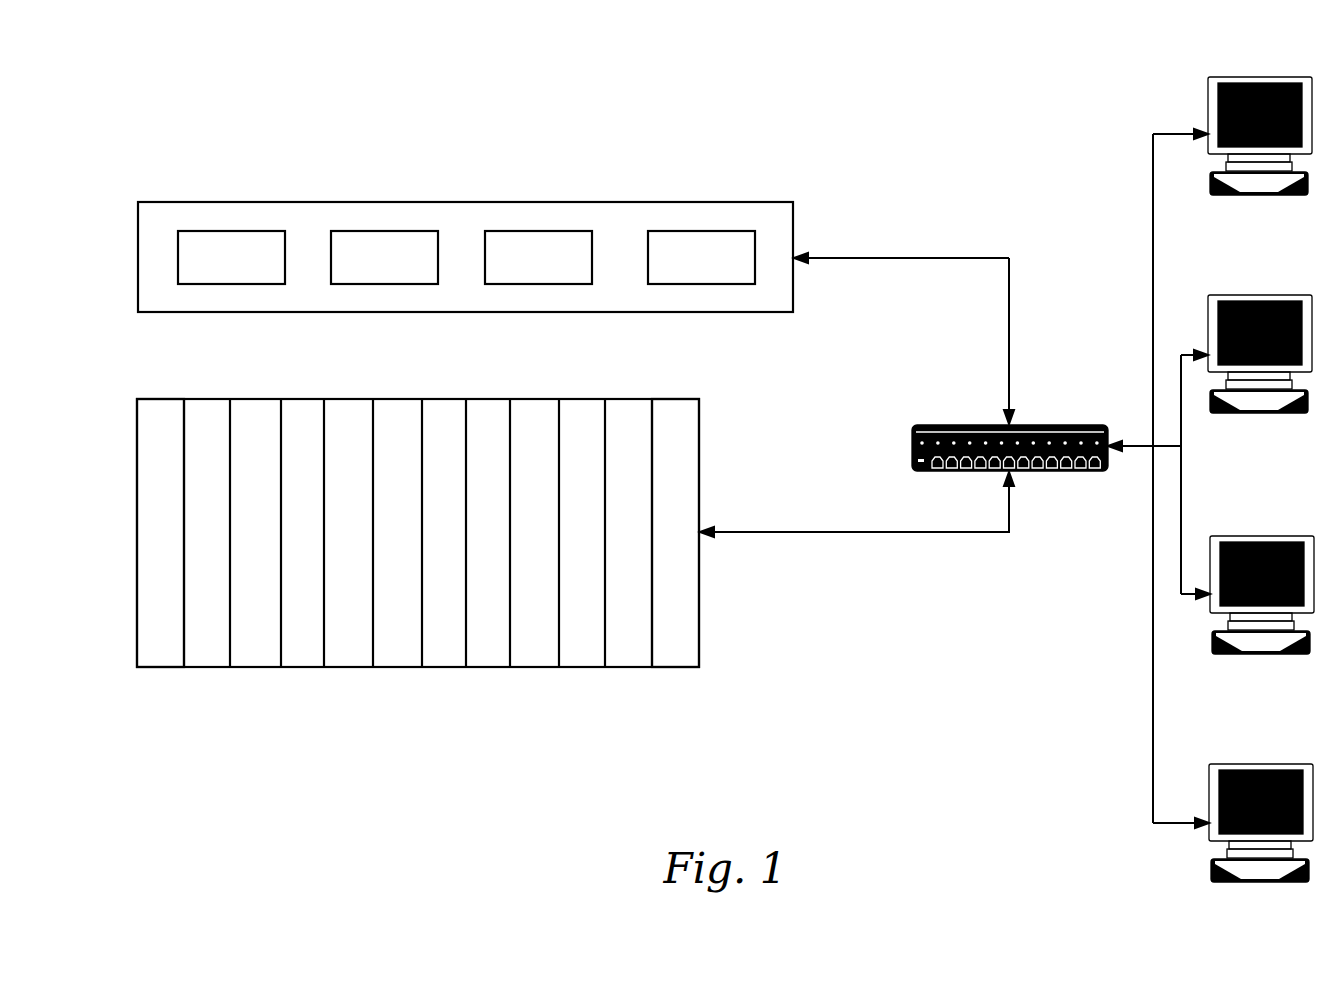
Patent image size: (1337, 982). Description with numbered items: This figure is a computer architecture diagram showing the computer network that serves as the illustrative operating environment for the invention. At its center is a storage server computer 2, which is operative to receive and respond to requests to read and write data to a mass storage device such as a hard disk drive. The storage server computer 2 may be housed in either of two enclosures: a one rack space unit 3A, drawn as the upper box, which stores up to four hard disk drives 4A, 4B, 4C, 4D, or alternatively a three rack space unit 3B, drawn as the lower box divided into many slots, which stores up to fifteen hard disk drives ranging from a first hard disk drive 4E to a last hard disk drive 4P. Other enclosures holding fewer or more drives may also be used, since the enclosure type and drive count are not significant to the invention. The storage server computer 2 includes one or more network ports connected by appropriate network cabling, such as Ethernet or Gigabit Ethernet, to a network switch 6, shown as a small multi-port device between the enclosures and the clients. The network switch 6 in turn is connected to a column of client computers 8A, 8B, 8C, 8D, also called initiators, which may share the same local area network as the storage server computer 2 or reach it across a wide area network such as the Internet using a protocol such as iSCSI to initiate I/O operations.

The storage server computer 2 is at (660, 152).
The one rack space unit 3A is at (452, 206).
The three rack space unit 3B is at (420, 668).
The hard disk drive 4A is at (222, 240).
The hard disk drive 4B is at (372, 244).
The hard disk drive 4C is at (548, 240).
The hard disk drive 4D is at (716, 254).
The hard disk drive 4E is at (165, 657).
The hard disk drive 4P is at (672, 664).
The network switch 6 is at (1075, 466).
The client computer 8A is at (1258, 86).
The client computer 8B is at (1260, 298).
The client computer 8C is at (1248, 541).
The client computer 8D is at (1245, 771).